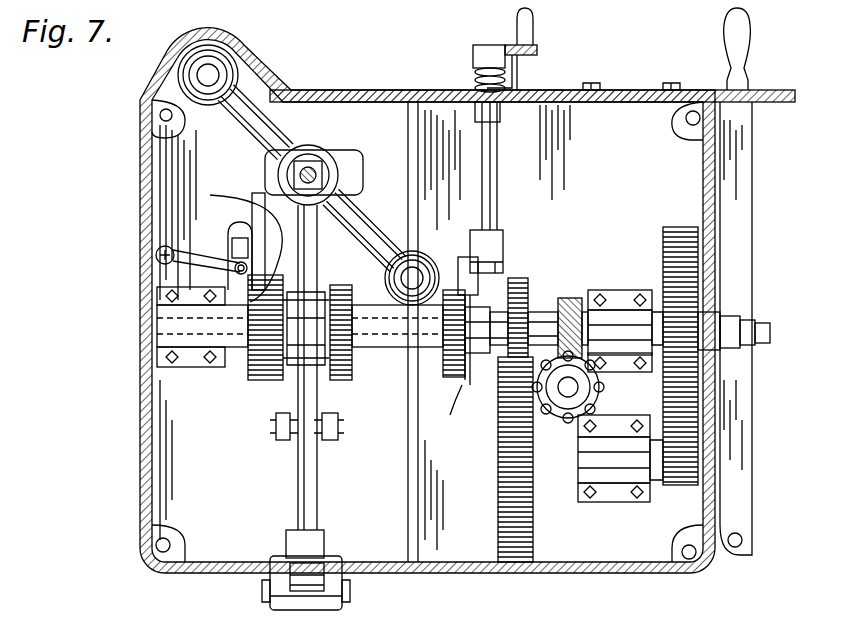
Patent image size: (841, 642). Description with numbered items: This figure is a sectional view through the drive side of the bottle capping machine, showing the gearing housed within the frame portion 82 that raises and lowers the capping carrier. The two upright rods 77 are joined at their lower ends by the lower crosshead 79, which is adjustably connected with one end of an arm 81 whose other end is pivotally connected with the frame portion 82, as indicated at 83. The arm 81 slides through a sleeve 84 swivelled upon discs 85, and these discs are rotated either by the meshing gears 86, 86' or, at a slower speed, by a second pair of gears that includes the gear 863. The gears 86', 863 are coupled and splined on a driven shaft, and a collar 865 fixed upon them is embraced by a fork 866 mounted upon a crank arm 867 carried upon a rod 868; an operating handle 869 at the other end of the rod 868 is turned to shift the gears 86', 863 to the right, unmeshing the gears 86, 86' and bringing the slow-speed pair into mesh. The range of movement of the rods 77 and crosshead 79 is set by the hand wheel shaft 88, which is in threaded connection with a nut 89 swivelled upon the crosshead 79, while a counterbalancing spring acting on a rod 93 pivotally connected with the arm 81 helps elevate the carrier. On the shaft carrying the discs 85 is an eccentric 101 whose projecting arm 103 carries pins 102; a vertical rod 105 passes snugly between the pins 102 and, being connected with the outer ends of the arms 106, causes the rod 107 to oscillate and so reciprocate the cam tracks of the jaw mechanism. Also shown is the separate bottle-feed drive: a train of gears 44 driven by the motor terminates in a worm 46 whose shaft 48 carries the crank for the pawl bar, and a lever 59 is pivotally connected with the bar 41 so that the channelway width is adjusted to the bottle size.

The bar 41 is at (629, 325).
The train of gears 44 is at (678, 232).
The worm 46 is at (580, 398).
The shaft 48 is at (520, 385).
The lever 59 is at (434, 632).
The upright rods 77 is at (212, 72).
The lower crosshead 79 is at (360, 222).
The arm 81 is at (318, 480).
The frame portion 82 is at (142, 185).
The pivot connection 83 is at (307, 598).
The sleeve 84 is at (300, 370).
The discs 85 is at (266, 352).
The gear 86 is at (472, 372).
The gear 86' is at (408, 377).
The gear 863 is at (565, 300).
The collar 865 is at (526, 302).
The fork 866 is at (504, 262).
The crank arm 867 is at (466, 257).
The rod 868 is at (497, 160).
The operating handle 869 is at (534, 32).
The shaft 88 is at (308, 167).
The nut 89 is at (322, 165).
The rod 93 is at (290, 440).
The eccentric 101 is at (238, 365).
The pins 102 is at (240, 225).
The arm 103 is at (252, 390).
The rod 105 is at (262, 240).
The arms 106 is at (236, 265).
The rod 107 is at (156, 258).